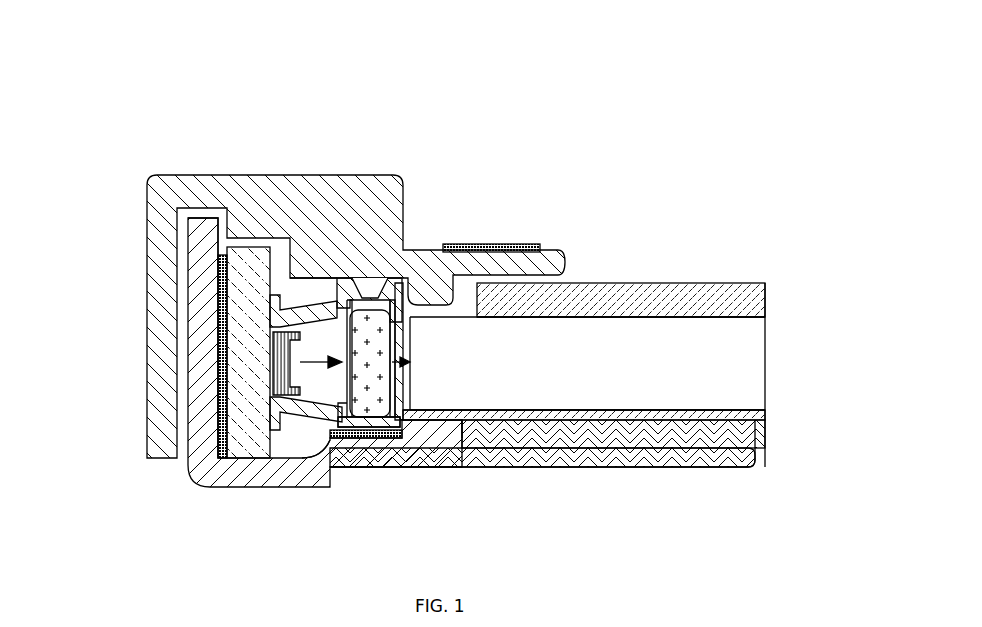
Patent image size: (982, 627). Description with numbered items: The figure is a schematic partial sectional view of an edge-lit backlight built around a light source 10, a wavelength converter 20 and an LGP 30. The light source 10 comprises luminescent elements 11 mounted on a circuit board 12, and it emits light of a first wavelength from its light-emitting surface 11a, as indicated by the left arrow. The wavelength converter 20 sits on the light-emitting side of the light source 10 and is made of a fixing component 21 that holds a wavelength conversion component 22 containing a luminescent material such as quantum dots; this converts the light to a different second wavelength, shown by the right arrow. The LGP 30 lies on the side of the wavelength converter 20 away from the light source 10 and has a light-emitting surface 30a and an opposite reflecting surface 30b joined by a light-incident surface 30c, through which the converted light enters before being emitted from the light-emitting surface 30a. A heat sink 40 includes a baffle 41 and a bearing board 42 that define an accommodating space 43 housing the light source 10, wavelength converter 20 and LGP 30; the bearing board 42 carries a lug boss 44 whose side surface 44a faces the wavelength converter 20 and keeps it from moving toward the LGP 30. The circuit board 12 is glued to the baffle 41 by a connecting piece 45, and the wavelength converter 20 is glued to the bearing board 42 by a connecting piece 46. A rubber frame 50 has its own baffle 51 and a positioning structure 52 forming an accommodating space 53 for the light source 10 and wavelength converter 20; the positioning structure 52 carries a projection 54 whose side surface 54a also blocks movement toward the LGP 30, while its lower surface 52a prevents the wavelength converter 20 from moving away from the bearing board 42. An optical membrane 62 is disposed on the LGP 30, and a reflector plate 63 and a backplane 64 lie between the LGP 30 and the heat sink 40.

The light source 10 is at (282, 536).
The luminescent elements 11 is at (280, 400).
The light-emitting surface 11a is at (288, 365).
The circuit board 12 is at (262, 447).
The wavelength converter 20 is at (548, 536).
The fixing component 21 is at (407, 403).
The wavelength conversion component 22 is at (380, 382).
The LGP 30 is at (738, 367).
The light-emitting surface 30a is at (627, 317).
The reflecting surface 30b is at (702, 408).
The light-incident surface 30c is at (410, 347).
The heat sink 40 is at (708, 467).
The baffle 41 is at (190, 440).
The bearing board 42 is at (607, 457).
The accommodating space 43 is at (302, 430).
The lug boss 44 is at (455, 433).
The side surface 44a is at (400, 440).
The connecting piece 45 is at (228, 447).
The connecting piece 46 is at (353, 437).
The rubber frame 50 is at (150, 183).
The baffle 51 is at (157, 355).
The positioning structure 52 is at (315, 188).
The lower surface 52a is at (352, 280).
The accommodating space 53 is at (300, 300).
The projection 54 is at (425, 293).
The side surface 54a is at (443, 248).
The optical membrane 62 is at (737, 298).
The reflector plate 63 is at (765, 414).
The backplane 64 is at (735, 435).